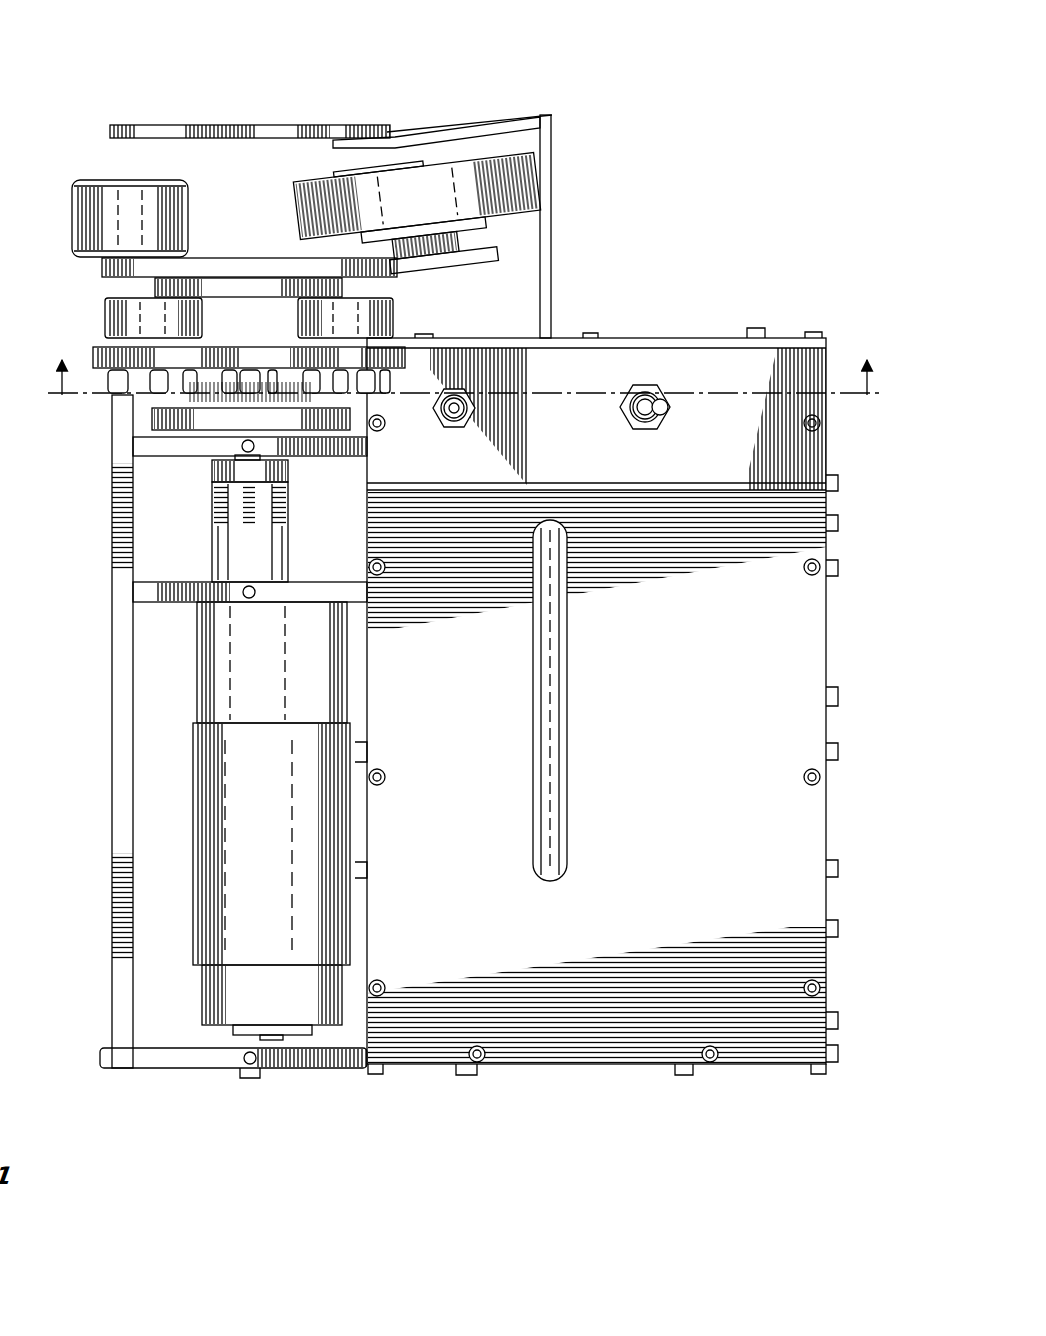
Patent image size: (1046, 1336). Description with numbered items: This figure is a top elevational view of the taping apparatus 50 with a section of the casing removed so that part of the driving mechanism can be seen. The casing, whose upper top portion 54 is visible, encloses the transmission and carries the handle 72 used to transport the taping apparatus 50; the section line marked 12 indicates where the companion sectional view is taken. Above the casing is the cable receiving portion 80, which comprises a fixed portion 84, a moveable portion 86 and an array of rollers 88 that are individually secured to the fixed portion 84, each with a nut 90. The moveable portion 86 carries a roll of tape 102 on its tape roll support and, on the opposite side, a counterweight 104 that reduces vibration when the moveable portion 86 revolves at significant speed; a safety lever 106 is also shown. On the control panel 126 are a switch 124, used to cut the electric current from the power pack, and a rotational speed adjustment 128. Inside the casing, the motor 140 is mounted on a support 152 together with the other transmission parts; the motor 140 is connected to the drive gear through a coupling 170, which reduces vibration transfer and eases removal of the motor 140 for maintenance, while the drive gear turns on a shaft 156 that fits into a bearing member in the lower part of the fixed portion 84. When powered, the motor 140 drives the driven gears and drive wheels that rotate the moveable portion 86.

The section line 12- 12 is at (464, 399).
The taping apparatus 50 is at (640, 1110).
The upper top portion 54 is at (714, 778).
The handle 72 is at (552, 692).
The cable receiving portion 80 is at (668, 130).
The fixed portion 84 is at (246, 355).
The moveable portion 86 is at (483, 257).
The rollers 88 is at (158, 310).
The nut 90 is at (390, 383).
The roll of tape 102 is at (518, 168).
The counterweight 104 is at (120, 198).
The safety lever 106 is at (270, 125).
The switch 124 is at (660, 407).
The control panel 126 is at (742, 453).
The rotational speed adjustment 128 is at (470, 408).
The motor 140 is at (243, 812).
The support 152 is at (182, 447).
The shaft 156 is at (247, 430).
The coupling 170 is at (245, 532).